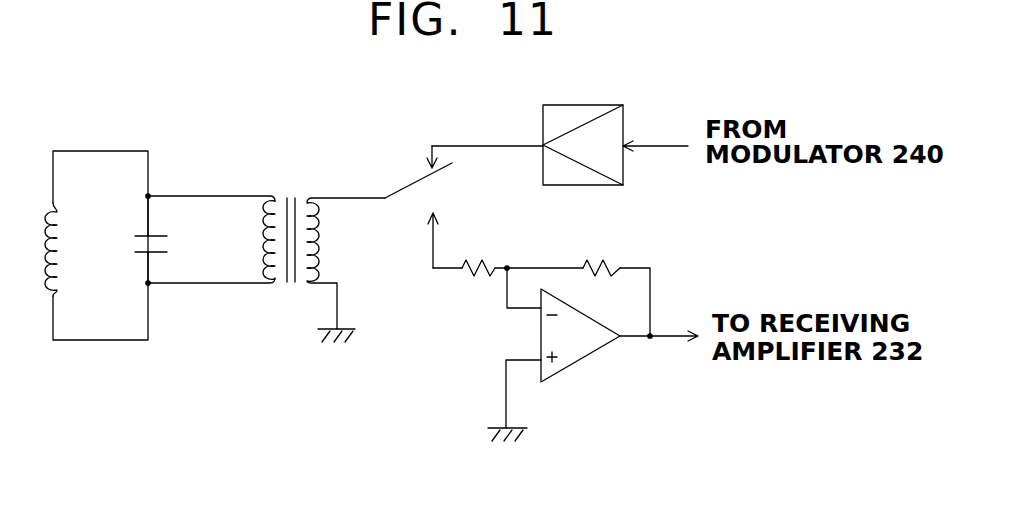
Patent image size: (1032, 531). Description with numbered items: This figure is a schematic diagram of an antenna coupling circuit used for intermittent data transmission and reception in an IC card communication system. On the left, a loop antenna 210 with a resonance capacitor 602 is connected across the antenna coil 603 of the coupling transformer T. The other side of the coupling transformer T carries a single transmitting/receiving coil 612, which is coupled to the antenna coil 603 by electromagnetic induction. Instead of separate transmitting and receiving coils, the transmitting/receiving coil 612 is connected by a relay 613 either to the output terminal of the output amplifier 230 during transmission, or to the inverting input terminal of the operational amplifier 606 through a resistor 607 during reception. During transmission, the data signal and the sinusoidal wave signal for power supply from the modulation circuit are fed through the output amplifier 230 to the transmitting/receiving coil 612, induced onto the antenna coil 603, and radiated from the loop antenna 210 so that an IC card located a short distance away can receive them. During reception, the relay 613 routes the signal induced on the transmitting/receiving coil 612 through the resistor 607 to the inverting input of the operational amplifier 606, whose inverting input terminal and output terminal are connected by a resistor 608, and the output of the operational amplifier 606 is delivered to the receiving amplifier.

The loop antenna 210 is at (62, 233).
The resonance capacitor 602 is at (170, 243).
The antenna coil 603 is at (260, 285).
The coupling transformer T is at (283, 198).
The transmitting/receiving coil 612 is at (322, 198).
The relay 613 is at (413, 182).
The output amplifier 230 is at (628, 135).
The resistor 607 is at (480, 255).
The resistor 608 is at (605, 258).
The operational amplifier 606 is at (590, 355).